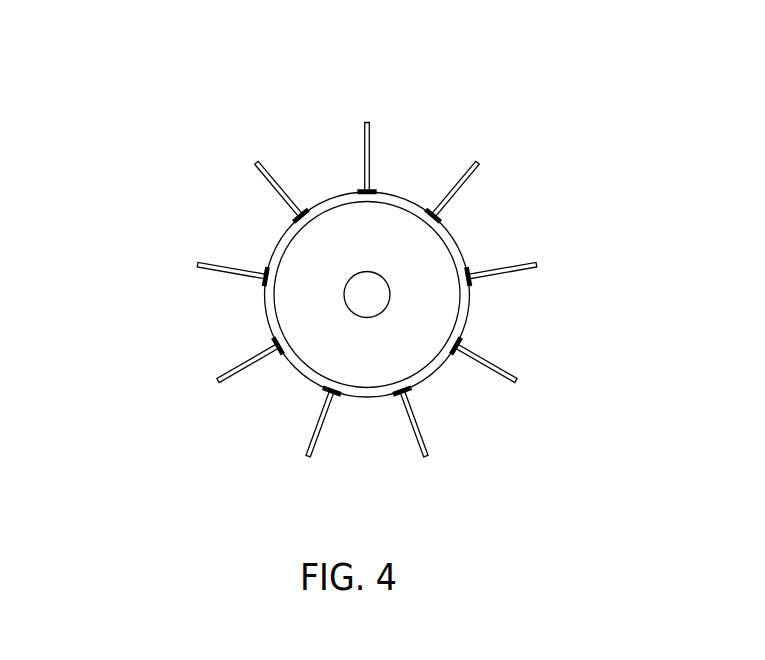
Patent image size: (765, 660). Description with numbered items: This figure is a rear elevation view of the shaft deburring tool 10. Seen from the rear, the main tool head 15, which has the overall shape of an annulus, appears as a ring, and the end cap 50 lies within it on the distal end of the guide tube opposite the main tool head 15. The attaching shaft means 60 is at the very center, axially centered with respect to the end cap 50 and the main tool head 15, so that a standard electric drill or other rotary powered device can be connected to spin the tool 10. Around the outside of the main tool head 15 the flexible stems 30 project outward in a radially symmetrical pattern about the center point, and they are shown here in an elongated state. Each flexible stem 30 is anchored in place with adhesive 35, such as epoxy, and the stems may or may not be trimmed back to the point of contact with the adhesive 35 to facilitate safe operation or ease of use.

The shaft deburring tool 10 is at (140, 110).
The main tool head 15 is at (331, 194).
The flexible stem 30 is at (478, 164).
The adhesive 35 is at (373, 189).
The end cap 50 is at (432, 306).
The attaching shaft means 60 is at (362, 295).